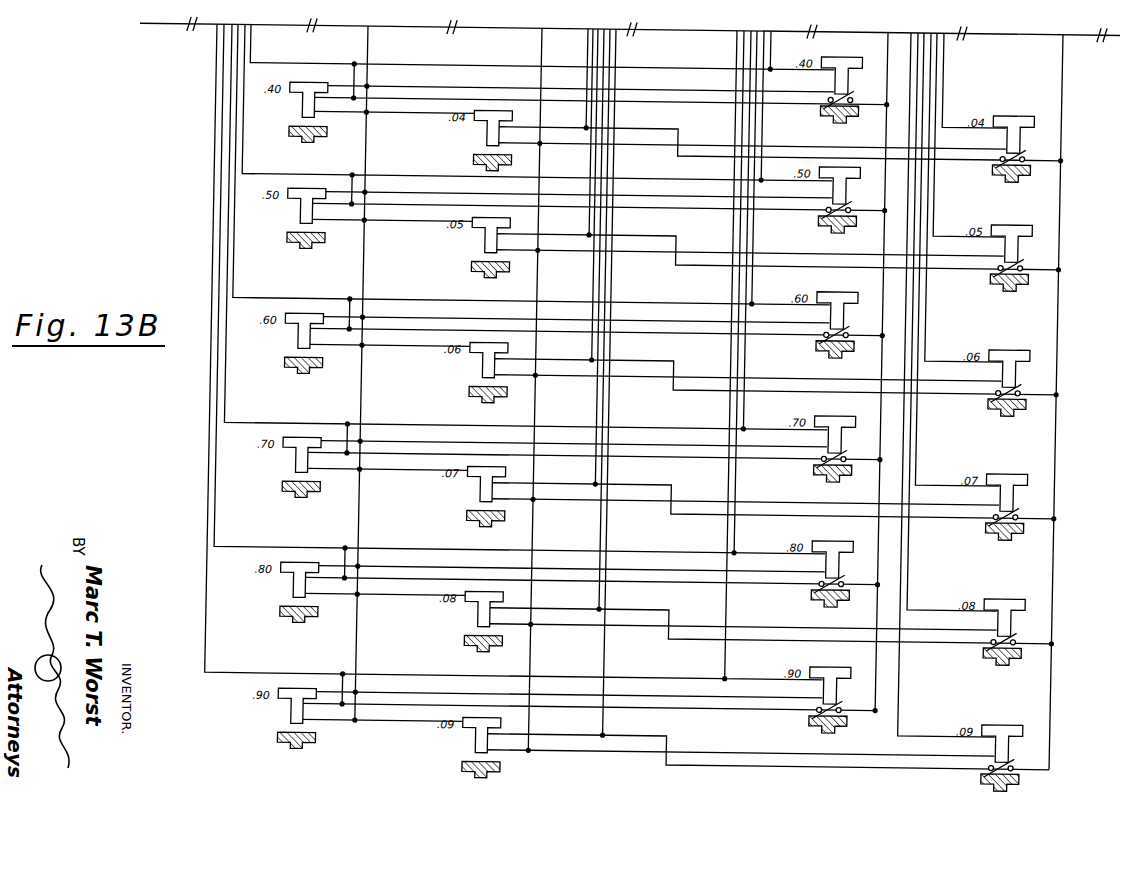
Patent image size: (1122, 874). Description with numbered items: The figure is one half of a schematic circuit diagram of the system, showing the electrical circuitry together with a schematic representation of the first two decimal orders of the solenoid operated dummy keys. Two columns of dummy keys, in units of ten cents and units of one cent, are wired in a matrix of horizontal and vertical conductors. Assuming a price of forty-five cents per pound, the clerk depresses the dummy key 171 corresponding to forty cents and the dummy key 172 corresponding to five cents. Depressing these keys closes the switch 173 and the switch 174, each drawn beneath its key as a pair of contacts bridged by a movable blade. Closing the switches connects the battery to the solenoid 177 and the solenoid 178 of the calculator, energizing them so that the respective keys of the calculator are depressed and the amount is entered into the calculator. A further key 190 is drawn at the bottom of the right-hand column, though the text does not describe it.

The dummy key 171 is at (851, 34).
The dummy key 172 is at (1026, 197).
The switch 173 is at (830, 106).
The switch 174 is at (1008, 266).
The solenoid 177 is at (315, 68).
The solenoid 178 is at (503, 207).
The plunger 190 is at (1025, 698).